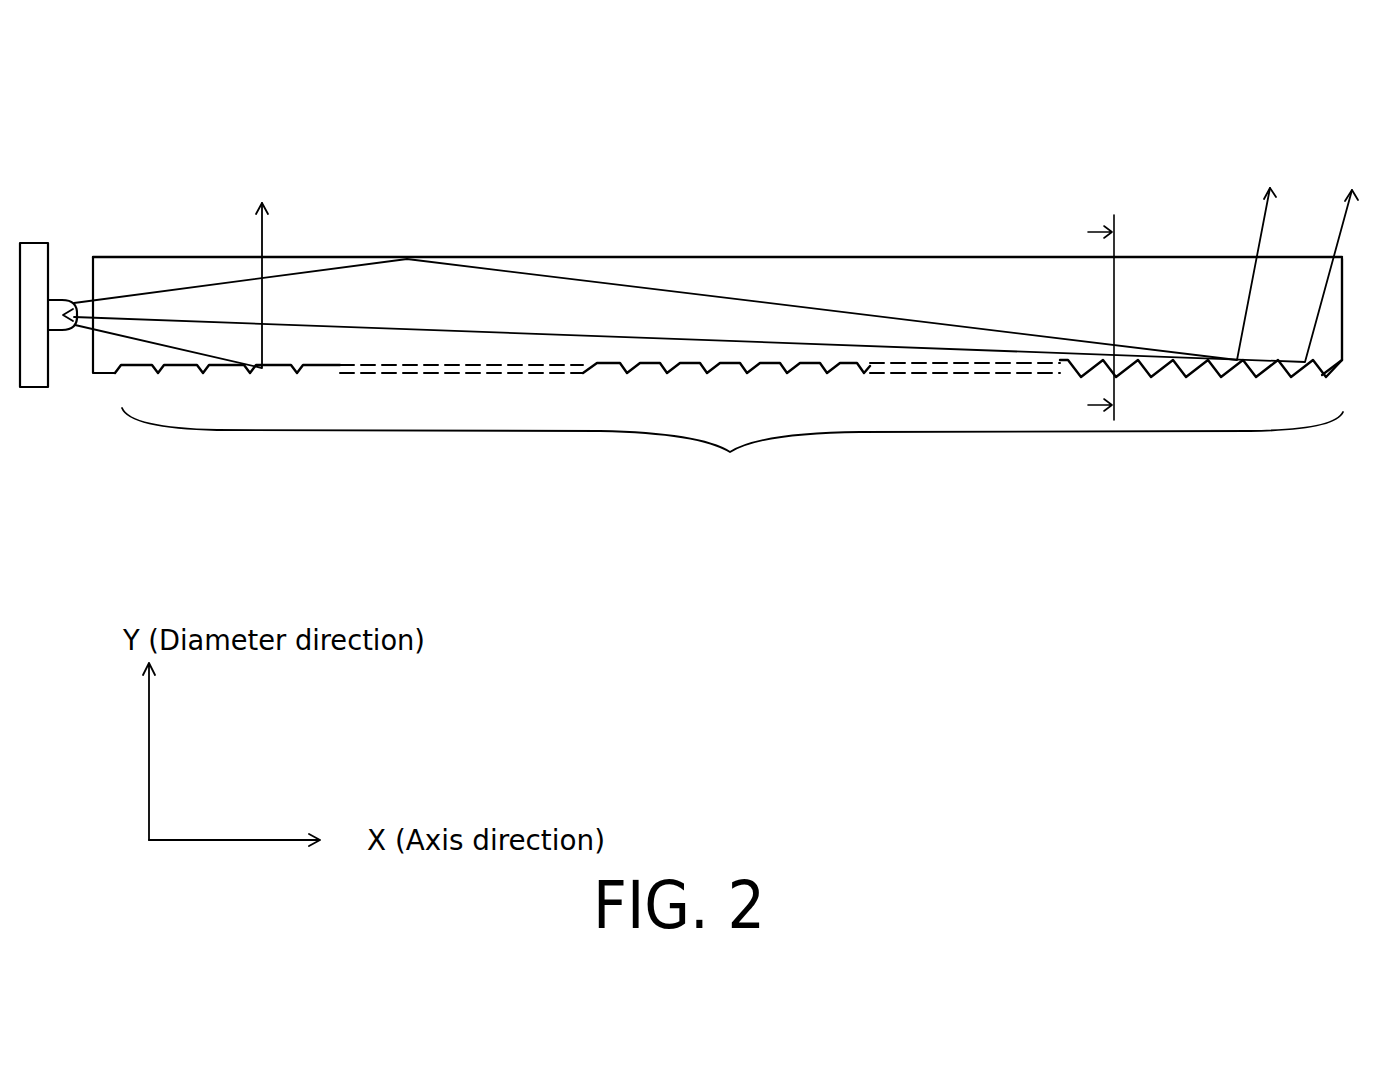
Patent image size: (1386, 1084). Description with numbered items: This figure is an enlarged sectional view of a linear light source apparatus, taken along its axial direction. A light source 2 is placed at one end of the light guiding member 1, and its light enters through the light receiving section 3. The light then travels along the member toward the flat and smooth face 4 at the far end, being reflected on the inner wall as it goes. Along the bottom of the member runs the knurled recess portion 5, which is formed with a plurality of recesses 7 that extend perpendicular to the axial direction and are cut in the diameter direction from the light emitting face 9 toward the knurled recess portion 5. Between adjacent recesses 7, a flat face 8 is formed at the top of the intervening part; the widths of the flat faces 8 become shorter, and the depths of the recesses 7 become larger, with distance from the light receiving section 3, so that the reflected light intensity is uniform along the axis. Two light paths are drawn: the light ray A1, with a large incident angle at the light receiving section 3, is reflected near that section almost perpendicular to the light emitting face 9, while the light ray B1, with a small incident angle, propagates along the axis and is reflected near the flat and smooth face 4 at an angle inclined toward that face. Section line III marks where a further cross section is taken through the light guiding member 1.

The light guiding member 1 is at (1127, 138).
The light source 2 is at (36, 360).
The light receiving section 3 is at (93, 280).
The flat and smooth face 4 is at (1343, 320).
The knurled recess portion 5 is at (729, 427).
The recesses 7 is at (600, 370).
The flat face 8 is at (325, 370).
The light emitting face 9 is at (758, 257).
The light ray A1 is at (145, 347).
The light ray B1 is at (427, 332).
The section line III is at (1080, 318).